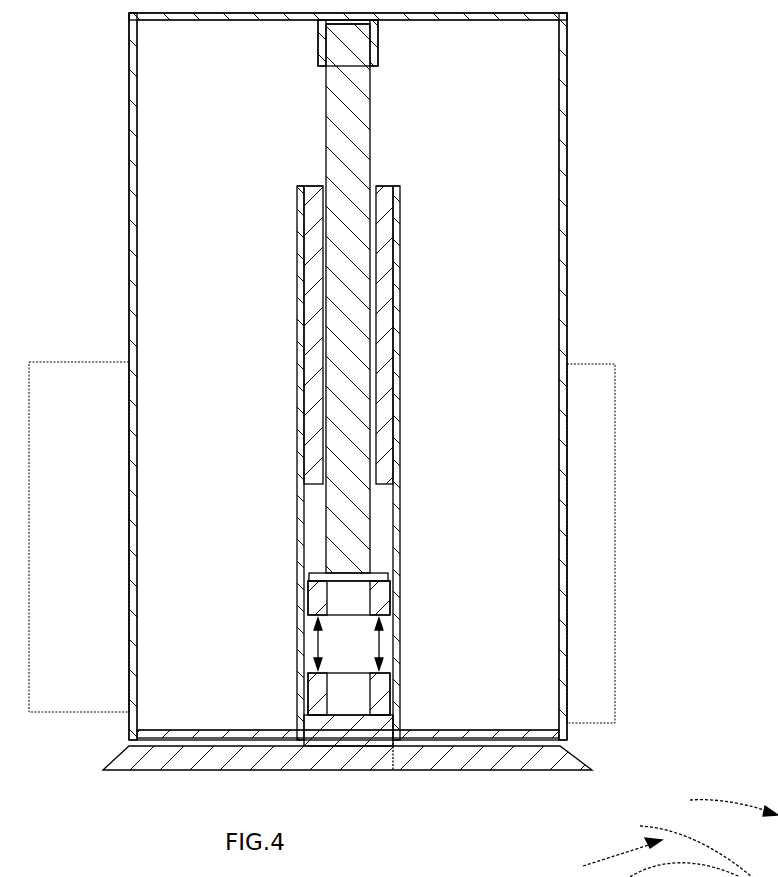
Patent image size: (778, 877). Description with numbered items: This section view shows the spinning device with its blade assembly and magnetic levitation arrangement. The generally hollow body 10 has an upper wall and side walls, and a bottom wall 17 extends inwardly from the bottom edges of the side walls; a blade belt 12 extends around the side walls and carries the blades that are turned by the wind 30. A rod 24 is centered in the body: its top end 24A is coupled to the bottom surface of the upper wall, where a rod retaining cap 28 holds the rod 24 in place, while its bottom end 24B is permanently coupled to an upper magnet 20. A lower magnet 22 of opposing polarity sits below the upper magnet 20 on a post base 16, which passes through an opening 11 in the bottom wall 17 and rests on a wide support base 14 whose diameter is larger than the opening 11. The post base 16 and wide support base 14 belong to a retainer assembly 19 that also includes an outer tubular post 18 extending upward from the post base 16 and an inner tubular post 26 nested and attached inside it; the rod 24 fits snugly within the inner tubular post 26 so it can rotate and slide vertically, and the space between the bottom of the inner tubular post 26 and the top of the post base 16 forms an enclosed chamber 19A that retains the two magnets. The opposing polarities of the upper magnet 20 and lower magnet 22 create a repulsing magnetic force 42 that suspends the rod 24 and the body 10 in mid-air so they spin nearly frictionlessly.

The hollow body 10 is at (130, 57).
The opening 11 is at (398, 750).
The blade belt 12 is at (92, 366).
The wide support base 14 is at (148, 772).
The post base 16 is at (398, 722).
The bottom wall 17 is at (548, 733).
The outer tubular post 18 is at (400, 218).
The retainer assembly 19 is at (240, 462).
The enclosed chamber 19A is at (302, 648).
The upper magnet 20 is at (386, 596).
The lower magnet 22 is at (387, 692).
The rod 24 is at (387, 505).
The top end of rod 24A is at (360, 70).
The bottom end of rod 24B is at (387, 562).
The inner tubular post 26 is at (300, 232).
The rod retaining cap 28 is at (318, 50).
The wind 30 is at (612, 853).
The repulsing magnetic force 42 is at (388, 640).